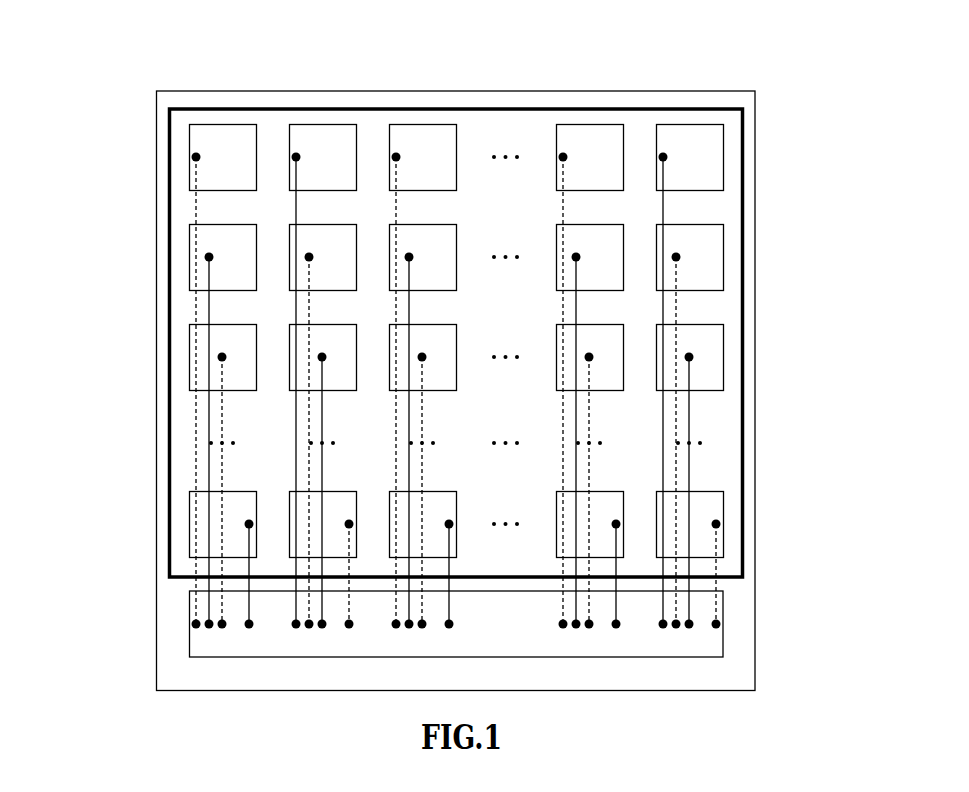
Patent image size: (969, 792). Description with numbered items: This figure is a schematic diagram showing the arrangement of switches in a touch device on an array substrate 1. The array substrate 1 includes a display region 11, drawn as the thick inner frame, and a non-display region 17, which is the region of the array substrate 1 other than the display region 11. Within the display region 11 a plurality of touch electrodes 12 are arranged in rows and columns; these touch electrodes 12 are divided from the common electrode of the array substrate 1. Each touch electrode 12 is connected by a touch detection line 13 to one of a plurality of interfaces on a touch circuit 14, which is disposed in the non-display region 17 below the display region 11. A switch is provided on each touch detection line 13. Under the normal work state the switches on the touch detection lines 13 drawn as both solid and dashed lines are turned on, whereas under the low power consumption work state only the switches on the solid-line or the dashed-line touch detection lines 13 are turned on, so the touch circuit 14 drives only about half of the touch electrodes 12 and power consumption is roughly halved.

The array substrate 1 is at (755, 357).
The display region 11 is at (742, 477).
The touch electrodes 12 is at (425, 124).
The touch detection lines 13 is at (195, 442).
The touch circuit 14 is at (189, 647).
The non-display region 17 is at (739, 657).